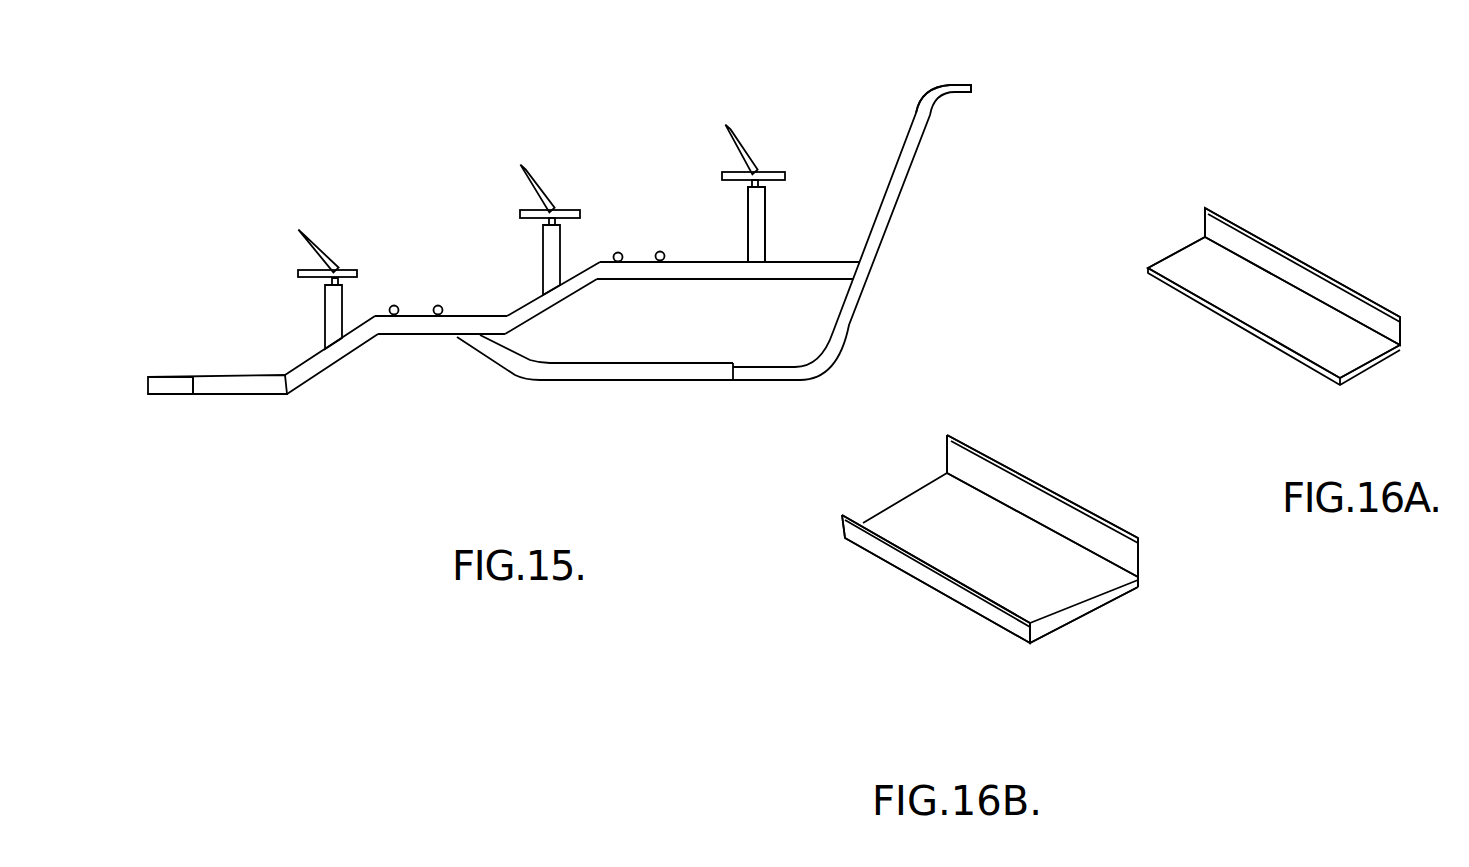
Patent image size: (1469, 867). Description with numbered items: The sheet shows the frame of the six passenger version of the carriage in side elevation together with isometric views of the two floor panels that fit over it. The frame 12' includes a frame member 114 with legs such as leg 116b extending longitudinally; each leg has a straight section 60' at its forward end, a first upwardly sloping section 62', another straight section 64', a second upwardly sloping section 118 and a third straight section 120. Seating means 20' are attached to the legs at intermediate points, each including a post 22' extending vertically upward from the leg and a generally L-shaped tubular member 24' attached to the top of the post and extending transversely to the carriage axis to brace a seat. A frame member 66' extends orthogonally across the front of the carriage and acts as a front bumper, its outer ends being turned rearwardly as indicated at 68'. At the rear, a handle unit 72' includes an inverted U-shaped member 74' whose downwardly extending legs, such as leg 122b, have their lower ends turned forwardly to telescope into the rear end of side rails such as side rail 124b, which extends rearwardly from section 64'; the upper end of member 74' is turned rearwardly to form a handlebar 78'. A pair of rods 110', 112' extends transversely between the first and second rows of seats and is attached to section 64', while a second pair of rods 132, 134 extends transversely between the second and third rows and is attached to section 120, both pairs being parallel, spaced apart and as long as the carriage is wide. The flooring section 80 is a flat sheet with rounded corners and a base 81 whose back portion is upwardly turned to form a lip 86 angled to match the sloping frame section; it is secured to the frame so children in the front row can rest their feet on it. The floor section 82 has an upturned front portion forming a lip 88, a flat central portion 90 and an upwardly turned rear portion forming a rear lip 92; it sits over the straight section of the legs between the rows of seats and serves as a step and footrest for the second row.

In FIG. 15, the frame 12' is at (533, 52).
In FIG. 15, the seating means 20' is at (564, 179).
In FIG. 15, the post 22' is at (513, 264).
In FIG. 15, the tubular member 24' is at (483, 203).
In FIG. 15, the straight section 60' is at (217, 411).
In FIG. 15, the first upwardly sloping section 62' is at (331, 361).
In FIG. 15, the straight section 64' is at (441, 361).
In FIG. 15, the frame member 66' is at (124, 391).
In FIG. 15, the rearwardly turned outer ends 68' is at (176, 362).
In FIG. 15, the handle unit 72' is at (1007, 80).
In FIG. 15, the inverted U-shaped member 74' is at (913, 84).
In FIG. 15, the handlebar 78' is at (977, 66).
In FIG. 15, the rod 110' is at (394, 283).
In FIG. 15, the rod 112' is at (454, 283).
In FIG. 15, the frame member 114 is at (467, 387).
In FIG. 15, the leg 116b is at (643, 290).
In FIG. 15, the second upwardly sloping section 118 is at (560, 305).
In FIG. 15, the third straight section 120 is at (748, 282).
In FIG. 15, the leg 122b is at (887, 222).
In FIG. 15, the side rail 124b is at (680, 382).
In FIG. 15, the rod 132 is at (632, 228).
In FIG. 15, the rod 134 is at (661, 251).
In FIG. 16A, the flooring section 80 is at (1351, 410).
In FIG. 16A, the bracket base flange 81 is at (1364, 373).
In FIG. 16A, the lip 86 is at (1401, 328).
In FIG. 16B, the floor section 82 is at (1054, 652).
In FIG. 16B, the lip 88 is at (955, 604).
In FIG. 16B, the flat central portion 90 is at (1084, 617).
In FIG. 16B, the rear lip 92 is at (1143, 563).